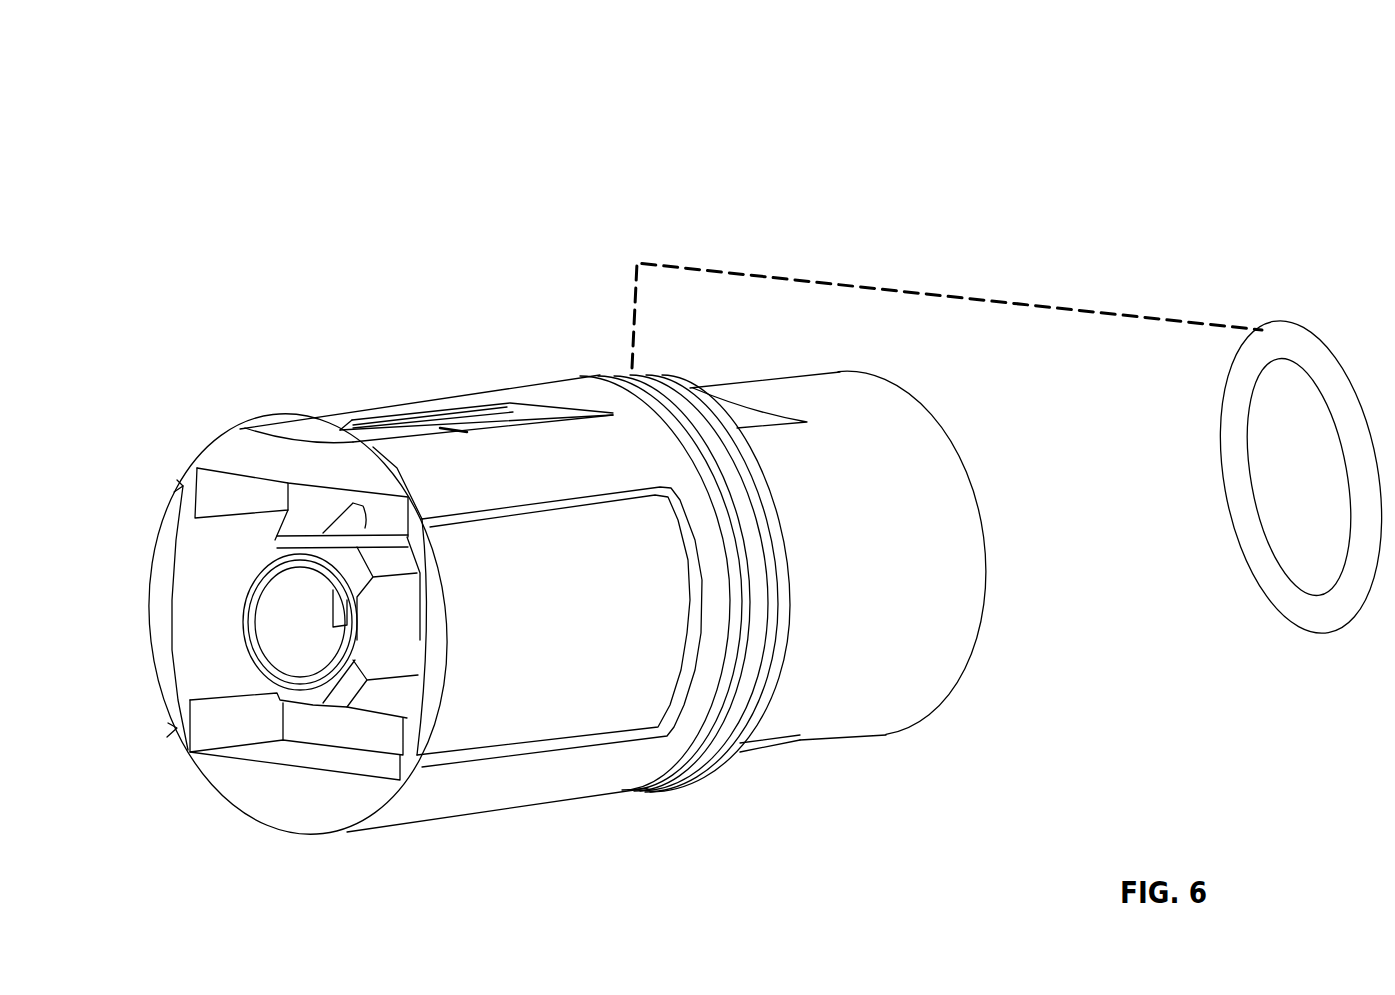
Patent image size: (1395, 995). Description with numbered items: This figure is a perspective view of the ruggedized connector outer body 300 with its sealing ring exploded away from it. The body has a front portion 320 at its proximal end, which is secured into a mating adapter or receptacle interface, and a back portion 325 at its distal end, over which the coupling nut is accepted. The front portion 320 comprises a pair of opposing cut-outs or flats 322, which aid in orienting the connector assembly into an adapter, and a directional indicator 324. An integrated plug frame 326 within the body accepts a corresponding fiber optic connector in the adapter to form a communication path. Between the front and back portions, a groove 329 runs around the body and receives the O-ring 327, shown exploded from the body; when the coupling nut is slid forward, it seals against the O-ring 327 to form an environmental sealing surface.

The ruggedized connector outer body 300 is at (162, 100).
The front body portion 320 is at (255, 420).
The cut-outs or flats 322 is at (152, 500).
The directional indicator 324 is at (469, 388).
The back portion 325 is at (945, 442).
The integrated plug frame 326 is at (272, 683).
The O-ring 327 is at (1234, 264).
The groove 329 is at (597, 361).